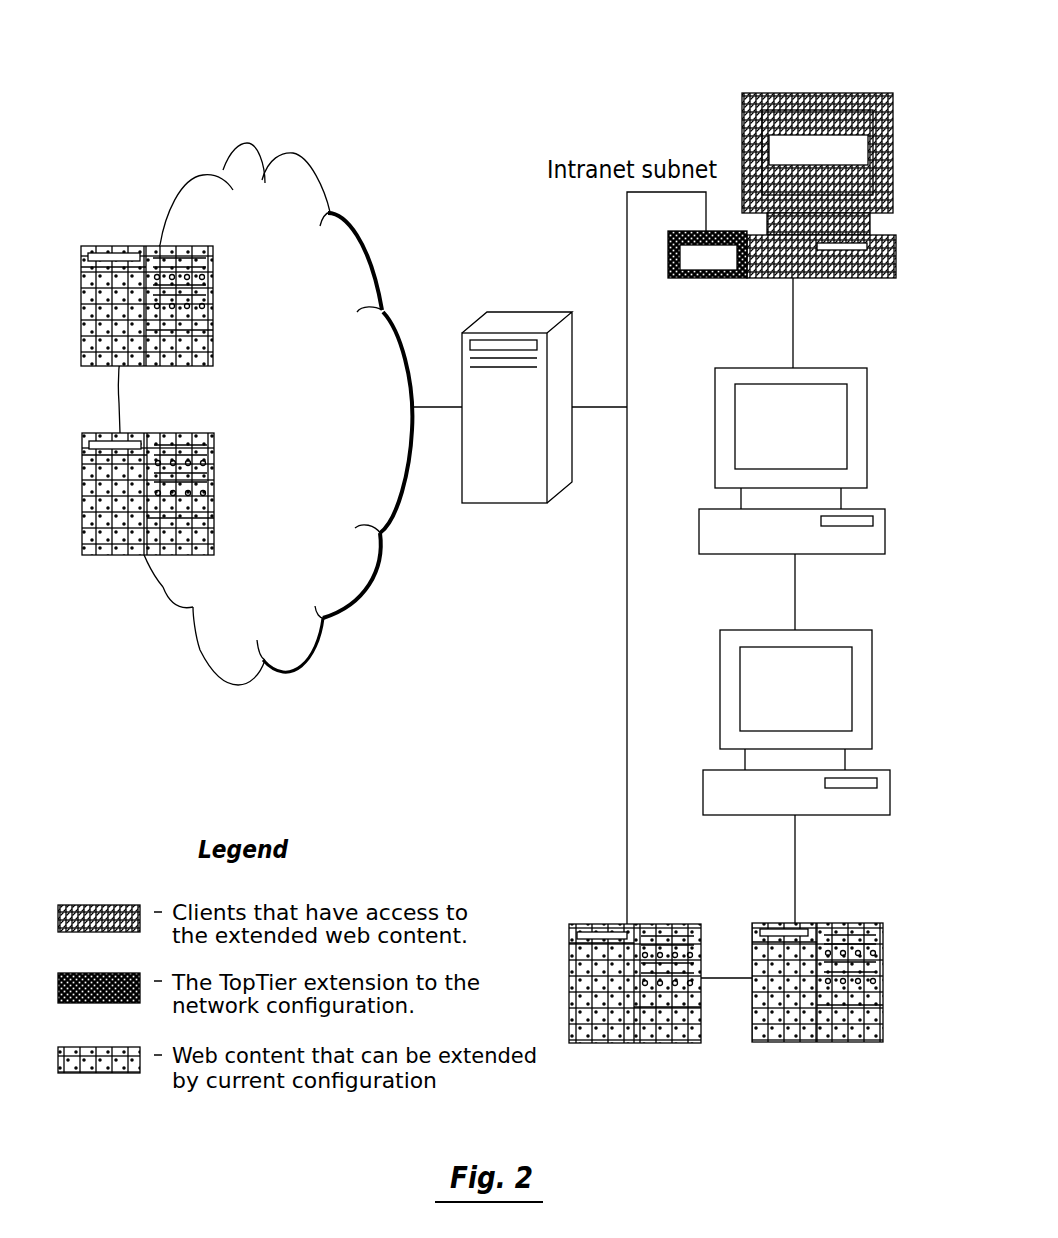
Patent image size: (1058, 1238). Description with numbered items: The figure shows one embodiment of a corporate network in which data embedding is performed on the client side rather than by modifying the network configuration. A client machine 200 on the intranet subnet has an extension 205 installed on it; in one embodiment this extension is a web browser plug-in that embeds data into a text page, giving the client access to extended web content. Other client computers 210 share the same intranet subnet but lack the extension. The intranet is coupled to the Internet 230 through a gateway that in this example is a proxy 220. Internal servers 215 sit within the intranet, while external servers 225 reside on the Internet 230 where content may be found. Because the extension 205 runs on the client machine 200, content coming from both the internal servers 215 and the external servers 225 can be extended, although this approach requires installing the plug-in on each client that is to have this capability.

The client machine 200 is at (852, 93).
The extension 205 is at (732, 278).
The client computer 210 is at (768, 368).
The internal servers 215 is at (577, 924).
The proxy server 220 is at (517, 318).
The external servers 225 is at (213, 323).
The Internet 230 is at (238, 663).